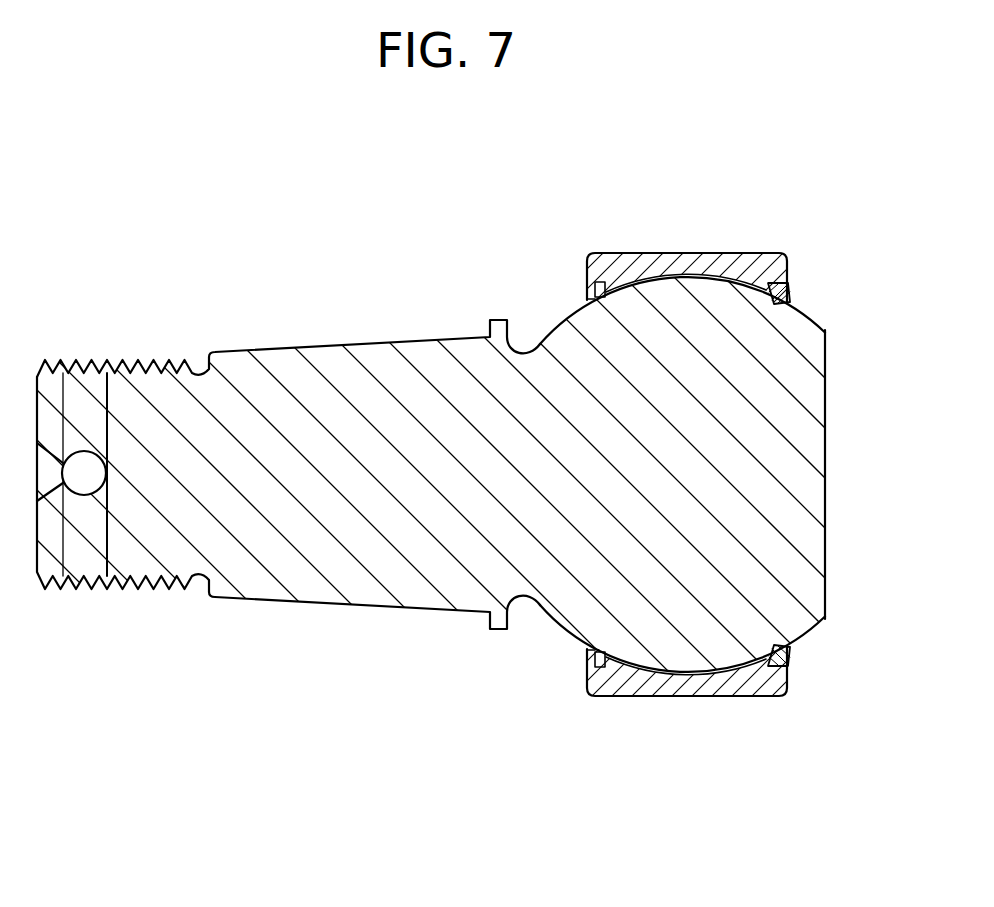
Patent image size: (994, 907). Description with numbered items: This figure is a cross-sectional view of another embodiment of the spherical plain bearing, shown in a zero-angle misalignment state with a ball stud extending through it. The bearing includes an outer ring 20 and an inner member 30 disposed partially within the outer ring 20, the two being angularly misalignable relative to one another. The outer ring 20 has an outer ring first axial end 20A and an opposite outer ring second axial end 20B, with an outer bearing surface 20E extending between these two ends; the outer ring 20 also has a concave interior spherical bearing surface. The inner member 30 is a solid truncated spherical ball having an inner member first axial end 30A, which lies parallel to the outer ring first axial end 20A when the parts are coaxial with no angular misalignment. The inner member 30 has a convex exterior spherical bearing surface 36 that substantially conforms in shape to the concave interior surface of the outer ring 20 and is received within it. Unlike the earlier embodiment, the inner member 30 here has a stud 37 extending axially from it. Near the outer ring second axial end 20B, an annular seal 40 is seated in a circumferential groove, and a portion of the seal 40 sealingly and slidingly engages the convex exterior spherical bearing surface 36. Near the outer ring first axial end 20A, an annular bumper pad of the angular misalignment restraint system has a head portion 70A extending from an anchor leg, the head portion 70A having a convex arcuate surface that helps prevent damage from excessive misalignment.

The outer ring 20 is at (737, 262).
The outer ring first axial end 20A is at (788, 271).
The outer ring second axial end 20B is at (585, 277).
The outer bearing surface 20E is at (703, 698).
The inner member 30 is at (810, 367).
The inner member first axial end 30A is at (824, 565).
The convex exterior spherical bearing surface 36 is at (567, 628).
The stud 37 is at (388, 572).
The annular seal 40 is at (585, 652).
The head portion 70A is at (798, 655).